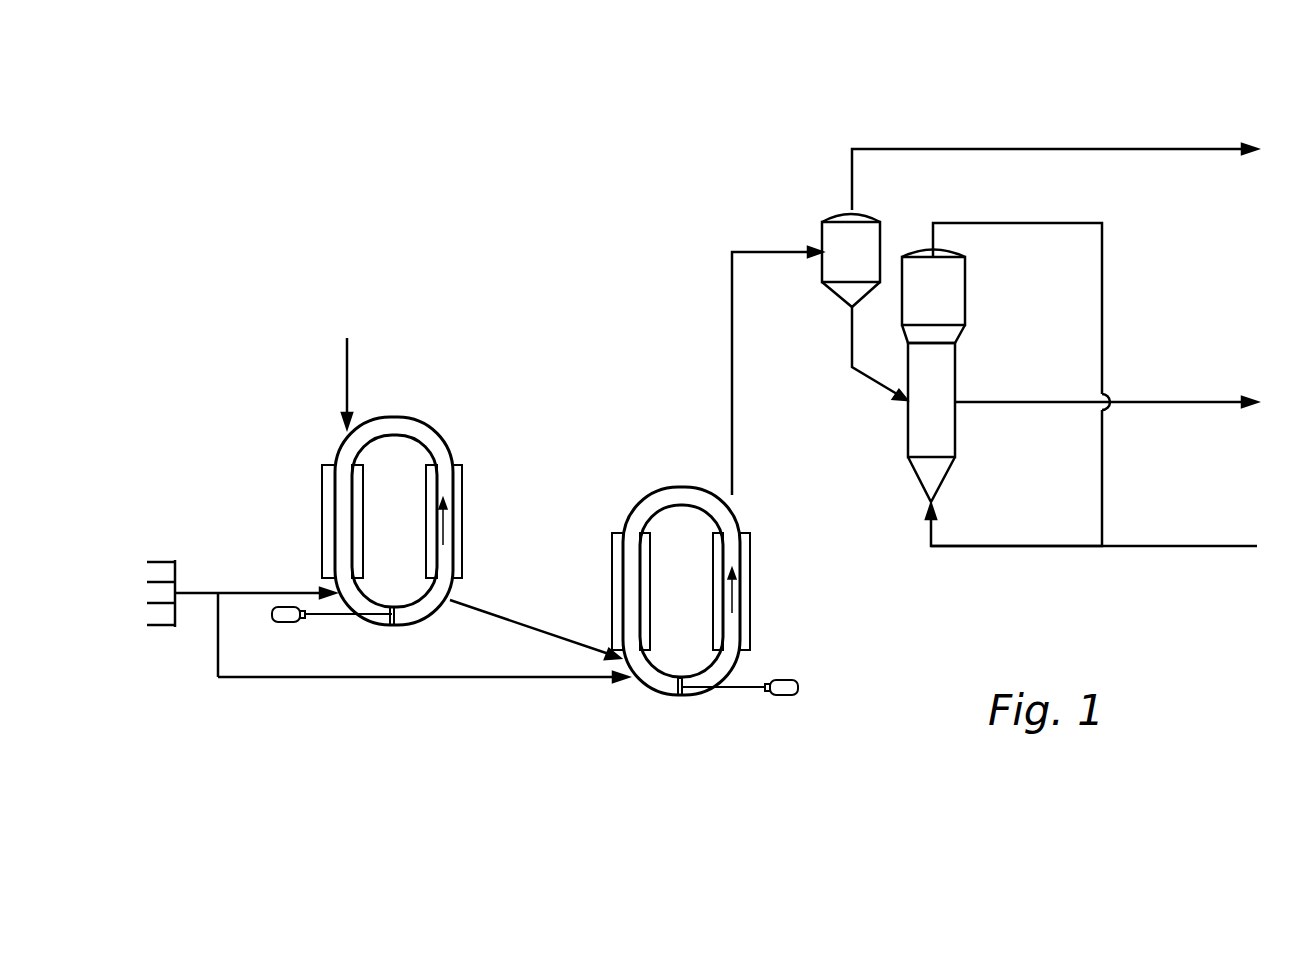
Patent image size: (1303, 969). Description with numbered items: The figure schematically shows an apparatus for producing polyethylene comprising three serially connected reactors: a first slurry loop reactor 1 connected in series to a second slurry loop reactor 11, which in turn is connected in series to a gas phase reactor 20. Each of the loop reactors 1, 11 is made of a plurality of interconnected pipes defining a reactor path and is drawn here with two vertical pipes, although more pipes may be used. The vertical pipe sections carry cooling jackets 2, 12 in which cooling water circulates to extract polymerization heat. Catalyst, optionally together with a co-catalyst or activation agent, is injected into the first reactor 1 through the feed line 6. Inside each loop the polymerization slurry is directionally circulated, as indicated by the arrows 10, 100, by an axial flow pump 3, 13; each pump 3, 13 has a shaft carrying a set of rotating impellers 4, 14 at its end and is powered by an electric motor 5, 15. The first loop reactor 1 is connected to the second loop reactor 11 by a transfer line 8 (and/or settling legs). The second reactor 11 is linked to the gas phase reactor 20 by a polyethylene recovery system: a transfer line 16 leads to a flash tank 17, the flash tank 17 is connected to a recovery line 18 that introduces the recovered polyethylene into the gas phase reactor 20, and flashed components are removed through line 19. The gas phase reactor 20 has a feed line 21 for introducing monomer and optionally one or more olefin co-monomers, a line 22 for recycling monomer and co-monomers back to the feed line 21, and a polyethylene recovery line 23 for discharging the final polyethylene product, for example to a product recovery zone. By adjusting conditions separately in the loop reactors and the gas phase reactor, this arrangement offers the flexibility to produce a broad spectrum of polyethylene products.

The first slurry loop reactor 1 is at (396, 421).
The cooling jacket 2 is at (322, 509).
The axial flow pump 3 is at (331, 616).
The rotating impellers 4 is at (392, 627).
The electric motor 5 is at (287, 622).
The feed line 6 is at (345, 361).
The transfer line 8 is at (512, 620).
The arrow 10 is at (449, 525).
The second slurry loop reactor 11 is at (685, 489).
The cooling jacket 12 is at (612, 565).
The axial flow pump 13 is at (741, 690).
The rotating impellers 14 is at (680, 697).
The electric motor 15 is at (786, 697).
The transfer line 16 is at (731, 323).
The flash tank 17 is at (835, 236).
The recovery line 18 is at (852, 340).
The line 19 is at (1207, 147).
The gas phase reactor 20 is at (959, 300).
The feed line 21 is at (1204, 545).
The line 22 is at (1103, 278).
The polyethylene recovery line 23 is at (1206, 400).
The arrow 100 is at (737, 596).